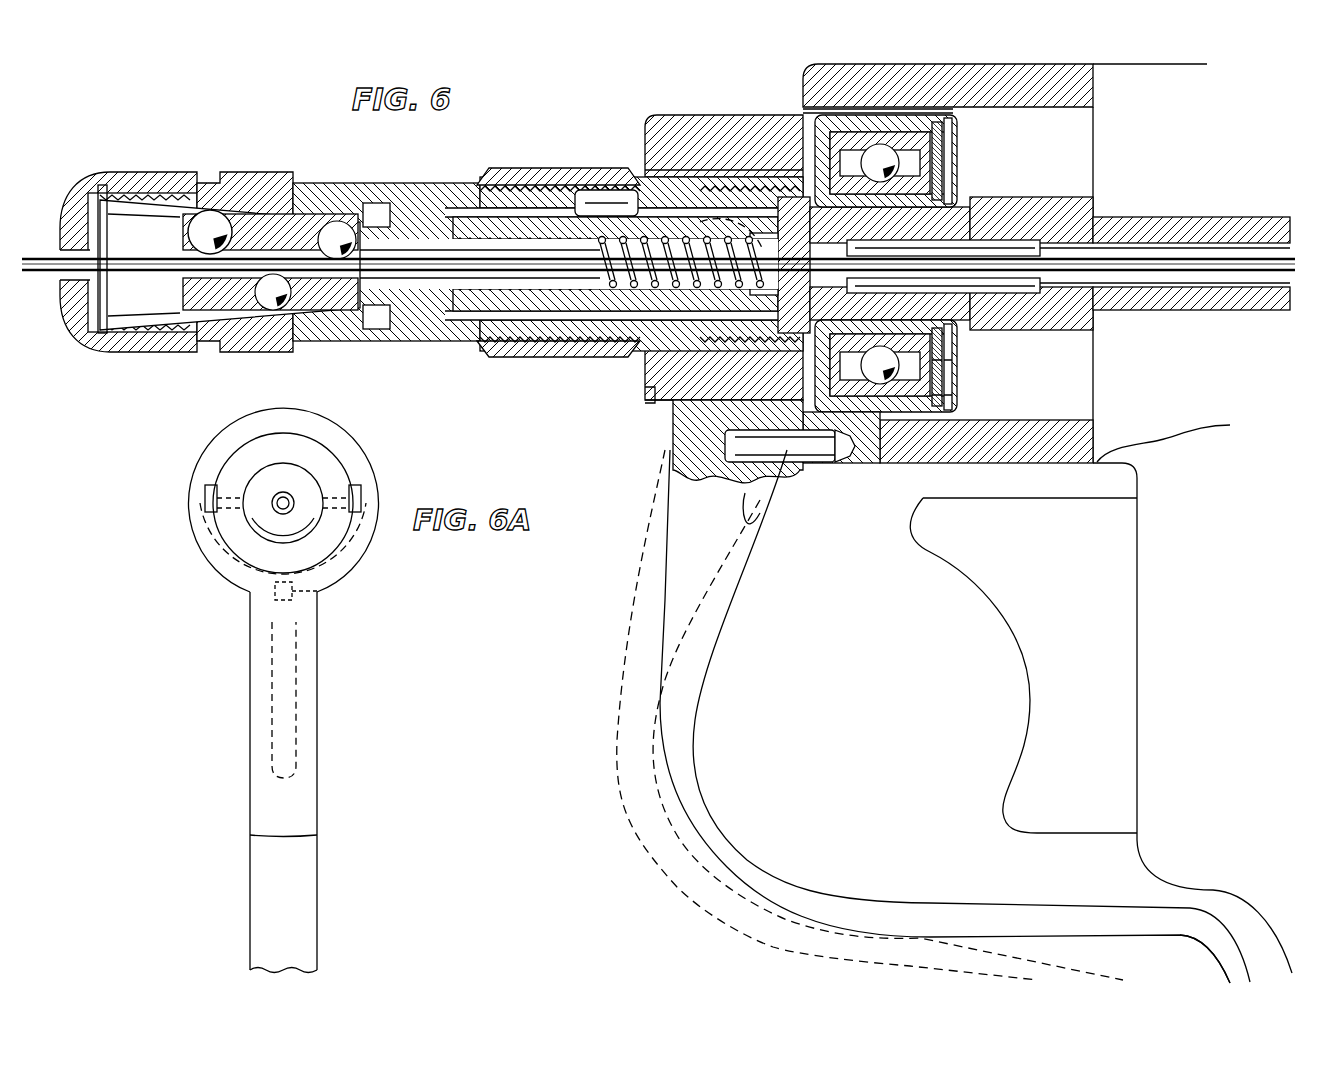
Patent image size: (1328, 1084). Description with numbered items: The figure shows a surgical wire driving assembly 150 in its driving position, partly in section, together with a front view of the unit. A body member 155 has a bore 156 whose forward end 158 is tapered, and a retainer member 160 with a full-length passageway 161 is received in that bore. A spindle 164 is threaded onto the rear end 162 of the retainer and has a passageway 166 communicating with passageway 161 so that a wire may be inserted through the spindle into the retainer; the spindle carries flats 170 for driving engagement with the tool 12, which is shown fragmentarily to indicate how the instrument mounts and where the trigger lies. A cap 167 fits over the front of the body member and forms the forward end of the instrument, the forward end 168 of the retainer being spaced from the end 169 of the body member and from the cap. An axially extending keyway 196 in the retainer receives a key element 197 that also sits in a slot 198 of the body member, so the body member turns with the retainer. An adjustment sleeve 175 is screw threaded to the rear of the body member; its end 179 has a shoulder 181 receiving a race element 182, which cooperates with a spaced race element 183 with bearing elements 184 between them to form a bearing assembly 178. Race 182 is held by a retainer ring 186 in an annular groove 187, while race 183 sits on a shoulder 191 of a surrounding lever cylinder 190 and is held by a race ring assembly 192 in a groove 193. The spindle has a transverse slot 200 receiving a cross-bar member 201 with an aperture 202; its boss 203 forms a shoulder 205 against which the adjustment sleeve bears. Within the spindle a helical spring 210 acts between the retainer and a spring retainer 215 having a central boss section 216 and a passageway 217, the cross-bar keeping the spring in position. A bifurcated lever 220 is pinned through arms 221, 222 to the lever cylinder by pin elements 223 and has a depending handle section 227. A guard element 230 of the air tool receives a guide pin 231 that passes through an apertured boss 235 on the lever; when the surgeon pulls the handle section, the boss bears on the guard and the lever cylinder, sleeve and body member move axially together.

In FIG. 6, the tool 12 is at (1182, 608).
In FIG. 6, the wire driving assembly 150 is at (500, 128).
In FIG. 6, the body member 155 is at (297, 340).
In FIG. 6, the bore 156 is at (410, 312).
In FIG. 6, the forward end of the bore 158 is at (172, 313).
In FIG. 6, the retainer member 160 is at (297, 227).
In FIG. 6, the passageway 161 is at (363, 267).
In FIG. 6, the rear end of the retainer 162 is at (497, 360).
In FIG. 6, the spindle 164 is at (1120, 303).
In FIG. 6, the passageway 166 is at (1218, 283).
In FIG. 6, the cap 167 is at (80, 332).
In FIG. 6, the forward end of the retainer 168 is at (180, 286).
In FIG. 6, the end of the body member 169 is at (118, 332).
In FIG. 6, the flats 170 is at (1098, 195).
In FIG. 6, the adjustment sleeve 175 is at (533, 360).
In FIG. 6, the bearing assembly 178 is at (962, 168).
In FIG. 6, the end of the adjustment sleeve 179 is at (753, 450).
In FIG. 6, the shoulder 181 is at (850, 393).
In FIG. 6, the race element 182 is at (917, 343).
In FIG. 6, the race element 183 is at (907, 390).
In FIG. 6, the bearing elements 184 is at (882, 387).
In FIG. 6, the retainer ring 186 is at (957, 367).
In FIG. 6, the annular groove 187 is at (1020, 317).
In FIG. 6, the lever cylinder 190 is at (690, 135).
In FIG. 6, the shoulder 191 is at (810, 143).
In FIG. 6, the race ring assembly 192 is at (950, 377).
In FIG. 6, the groove 193 is at (950, 395).
In FIG. 6, the keyway 196 is at (480, 218).
In FIG. 6, the key element 197 is at (597, 198).
In FIG. 6, the slot 198 is at (572, 208).
In FIG. 6, the transverse slot 200 is at (677, 395).
In FIG. 6, the cross-bar member 201 is at (847, 305).
In FIG. 6, the aperture 202 is at (733, 195).
In FIG. 6, the boss 203 is at (847, 213).
In FIG. 6, the shoulder 205 is at (677, 443).
In FIG. 6, the helical spring 210 is at (590, 290).
In FIG. 6, the spring retainer 215 is at (745, 277).
In FIG. 6, the central boss section 216 is at (653, 330).
In FIG. 6, the passageway 217 is at (695, 195).
In FIG. 6, the lever 220 is at (660, 597).
In FIG. 6A, the lever 220 is at (320, 690).
In FIG. 6A, the arm 221 is at (355, 530).
In FIG. 6, the arm 222 is at (633, 403).
In FIG. 6A, the arm 222 is at (205, 535).
In FIG. 6A, the pin elements 223 is at (350, 482).
In FIG. 6, the handle section 227 is at (1230, 957).
In FIG. 6A, the handle section 227 is at (307, 870).
In FIG. 6, the guard element 230 is at (1018, 457).
In FIG. 6A, the guard element 230 is at (243, 592).
In FIG. 6, the guide pin 231 is at (760, 513).
In FIG. 6A, the guide pin 231 is at (312, 598).
In FIG. 6, the boss 235 is at (777, 477).